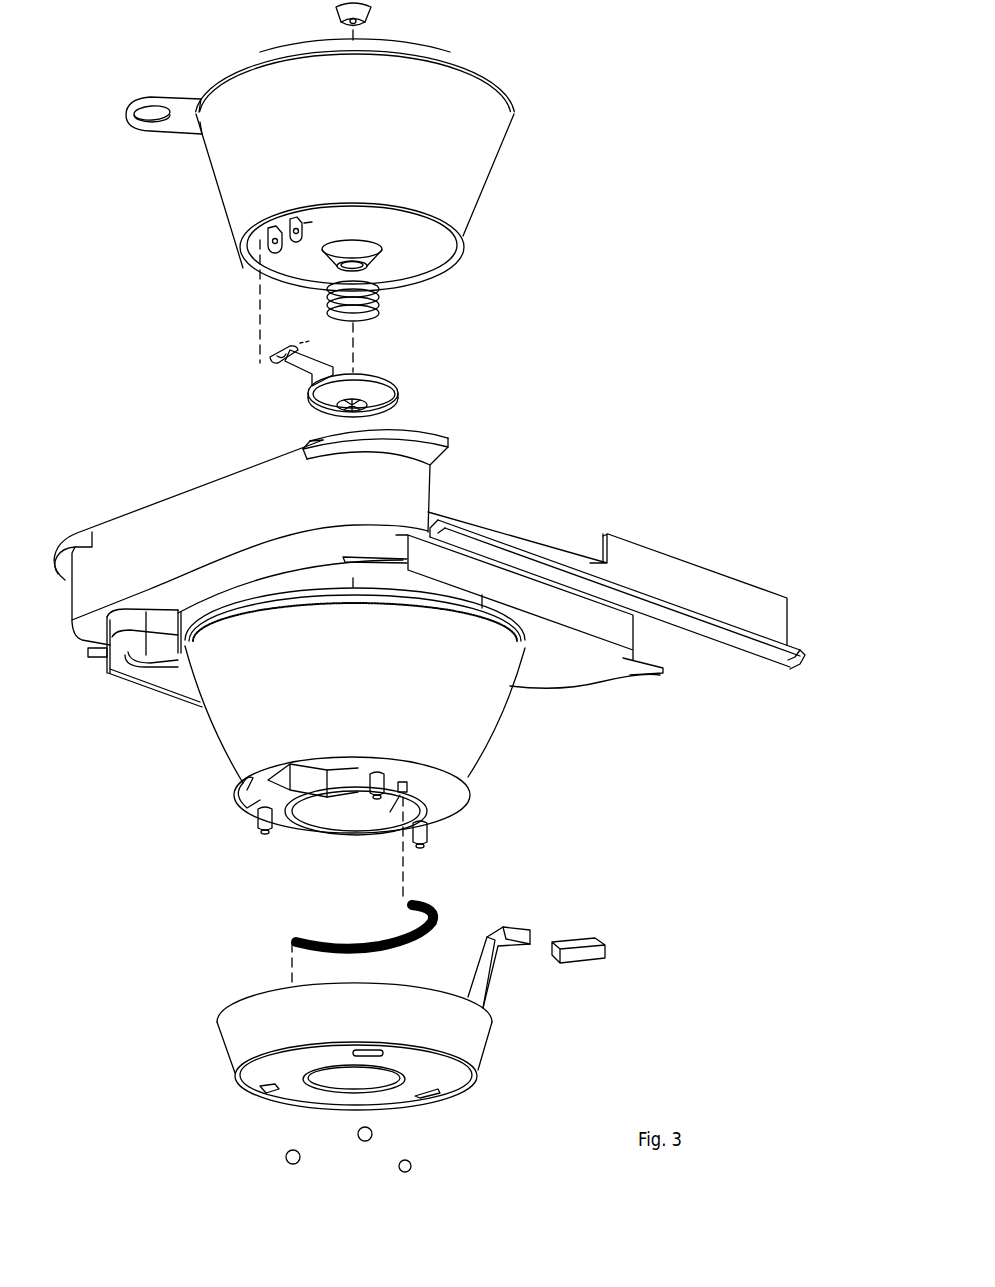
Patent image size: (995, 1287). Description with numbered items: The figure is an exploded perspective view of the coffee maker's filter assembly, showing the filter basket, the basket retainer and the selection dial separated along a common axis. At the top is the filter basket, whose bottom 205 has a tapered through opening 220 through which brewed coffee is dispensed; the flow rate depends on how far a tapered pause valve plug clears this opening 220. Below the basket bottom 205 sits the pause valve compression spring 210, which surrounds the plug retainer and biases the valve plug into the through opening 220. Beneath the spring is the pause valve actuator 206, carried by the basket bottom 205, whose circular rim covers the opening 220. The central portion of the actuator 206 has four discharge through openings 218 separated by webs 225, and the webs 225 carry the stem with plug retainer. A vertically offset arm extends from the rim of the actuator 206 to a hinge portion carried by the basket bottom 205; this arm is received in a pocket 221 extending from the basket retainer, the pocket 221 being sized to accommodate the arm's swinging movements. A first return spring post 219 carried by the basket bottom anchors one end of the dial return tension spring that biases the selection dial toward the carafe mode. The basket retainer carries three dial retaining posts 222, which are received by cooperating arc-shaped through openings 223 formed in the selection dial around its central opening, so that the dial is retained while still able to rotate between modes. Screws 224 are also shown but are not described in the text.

The bottom of the basket 205 is at (440, 250).
The tapered through opening 220 is at (383, 264).
The pause valve compression spring 210 is at (380, 306).
The pause valve actuator 206 is at (302, 392).
The through openings 218 is at (367, 402).
The webs 225 is at (350, 412).
The pocket 221 is at (250, 779).
The dial retaining posts 222 is at (258, 818).
The first return spring post 219 is at (408, 784).
The arc-shaped through openings 223 is at (260, 1088).
The screw 224 is at (285, 1153).